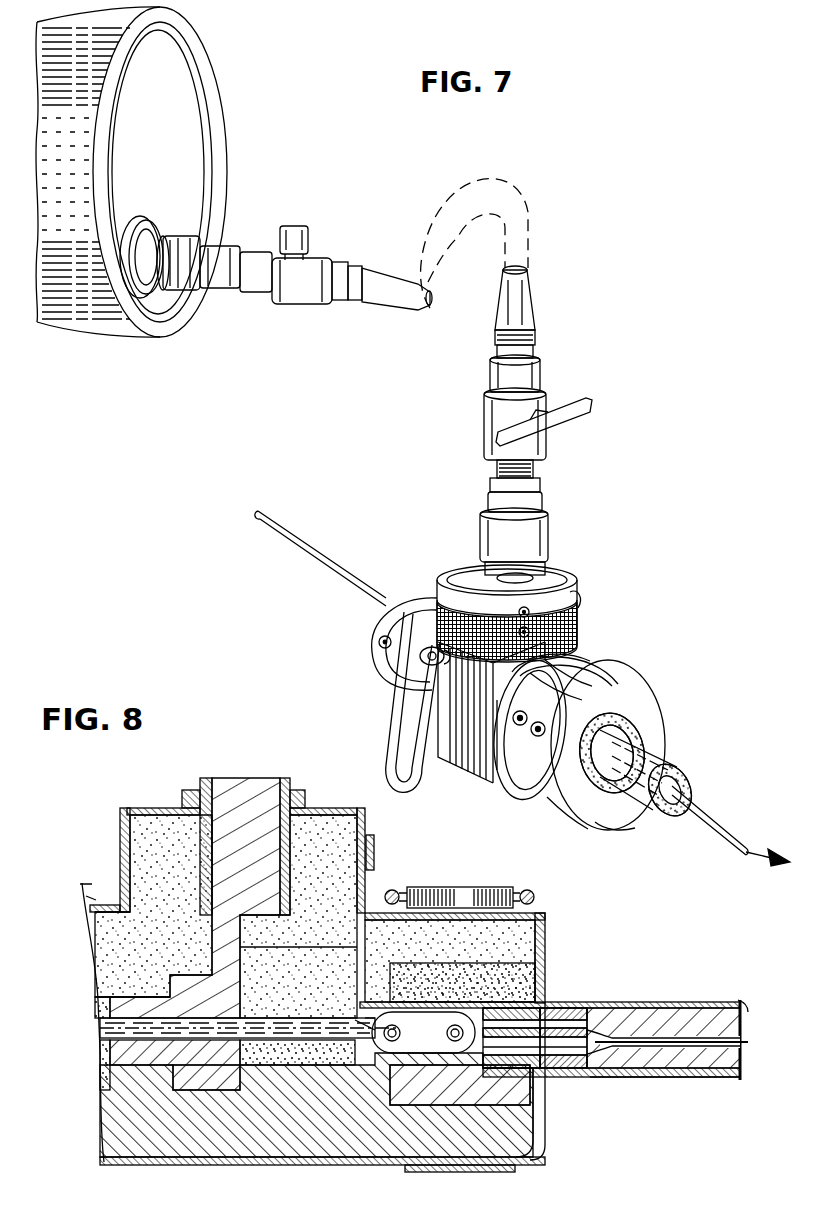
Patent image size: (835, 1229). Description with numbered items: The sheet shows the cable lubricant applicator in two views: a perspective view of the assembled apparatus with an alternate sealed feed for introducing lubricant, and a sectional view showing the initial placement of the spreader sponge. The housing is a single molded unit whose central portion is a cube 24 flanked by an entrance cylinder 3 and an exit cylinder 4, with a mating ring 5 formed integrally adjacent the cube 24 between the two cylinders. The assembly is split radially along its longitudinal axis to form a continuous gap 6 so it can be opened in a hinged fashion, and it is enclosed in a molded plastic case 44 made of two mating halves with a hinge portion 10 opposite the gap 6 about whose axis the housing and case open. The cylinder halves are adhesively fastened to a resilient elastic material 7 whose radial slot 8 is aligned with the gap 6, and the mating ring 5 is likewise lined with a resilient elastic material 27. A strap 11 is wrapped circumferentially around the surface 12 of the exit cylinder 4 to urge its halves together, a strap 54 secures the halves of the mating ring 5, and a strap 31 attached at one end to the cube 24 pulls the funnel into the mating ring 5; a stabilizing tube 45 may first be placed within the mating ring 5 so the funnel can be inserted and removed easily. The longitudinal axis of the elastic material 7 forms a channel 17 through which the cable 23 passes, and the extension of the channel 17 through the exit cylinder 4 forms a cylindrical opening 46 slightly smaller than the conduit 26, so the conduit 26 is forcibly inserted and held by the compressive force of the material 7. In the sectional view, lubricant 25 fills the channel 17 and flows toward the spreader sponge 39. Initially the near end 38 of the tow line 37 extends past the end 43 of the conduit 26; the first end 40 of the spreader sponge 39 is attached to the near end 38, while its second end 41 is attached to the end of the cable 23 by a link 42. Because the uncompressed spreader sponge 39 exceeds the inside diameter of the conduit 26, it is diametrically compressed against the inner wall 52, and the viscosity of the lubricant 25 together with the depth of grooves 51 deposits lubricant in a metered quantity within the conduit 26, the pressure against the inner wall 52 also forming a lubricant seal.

In FIG. 7, the entrance cylinder 3 is at (378, 648).
In FIG. 7, the exit cylinder 4 is at (652, 692).
In FIG. 8, the exit cylinder 4 is at (548, 931).
In FIG. 7, the mating ring 5 is at (566, 575).
In FIG. 8, the mating ring 5 is at (366, 827).
In FIG. 7, the continuous gap 6 is at (562, 568).
In FIG. 7, the resilient elastic material 7 is at (562, 792).
In FIG. 8, the resilient elastic material 7 is at (542, 1150).
In FIG. 7, the radial slot 8 is at (665, 722).
In FIG. 7, the hinge portion 10 is at (615, 820).
In FIG. 7, the strap 11 is at (532, 776).
In FIG. 7, the surface 12 is at (628, 672).
In FIG. 8, the channel 17 is at (368, 1030).
In FIG. 7, the cable 23 is at (282, 526).
In FIG. 8, the cable 23 is at (115, 1025).
In FIG. 7, the cube 24 is at (466, 718).
In FIG. 8, the cube 24 is at (352, 1028).
In FIG. 8, the lubricant 25 is at (233, 790).
In FIG. 7, the conduit 26 is at (658, 762).
In FIG. 8, the conduit 26 is at (678, 1004).
In FIG. 8, the resilient elastic material 27 is at (168, 830).
In FIG. 7, the strap 31 is at (400, 692).
In FIG. 7, the tow line 37 is at (728, 846).
In FIG. 8, the tow line 37 is at (730, 1044).
In FIG. 8, the near end 38 is at (614, 1008).
In FIG. 7, the spreader sponge 39 is at (692, 790).
In FIG. 8, the spreader sponge 39 is at (578, 1070).
In FIG. 8, the first end 40 is at (620, 1074).
In FIG. 8, the second end 41 is at (500, 1078).
In FIG. 8, the link 42 is at (415, 1055).
In FIG. 8, the end of conduit 43 is at (442, 888).
In FIG. 8, the molded plastic case 44 is at (300, 1166).
In FIG. 8, the stabilizing tube 45 is at (292, 788).
In FIG. 7, the cylindrical opening 46 is at (604, 794).
In FIG. 8, the cylindrical opening 46 is at (577, 990).
In FIG. 7, the grooves 51 is at (660, 808).
In FIG. 8, the grooves 51 is at (622, 990).
In FIG. 8, the inner wall 52 is at (688, 1080).
In FIG. 7, the strap 54 is at (585, 597).
In FIG. 8, the strap 54 is at (374, 852).